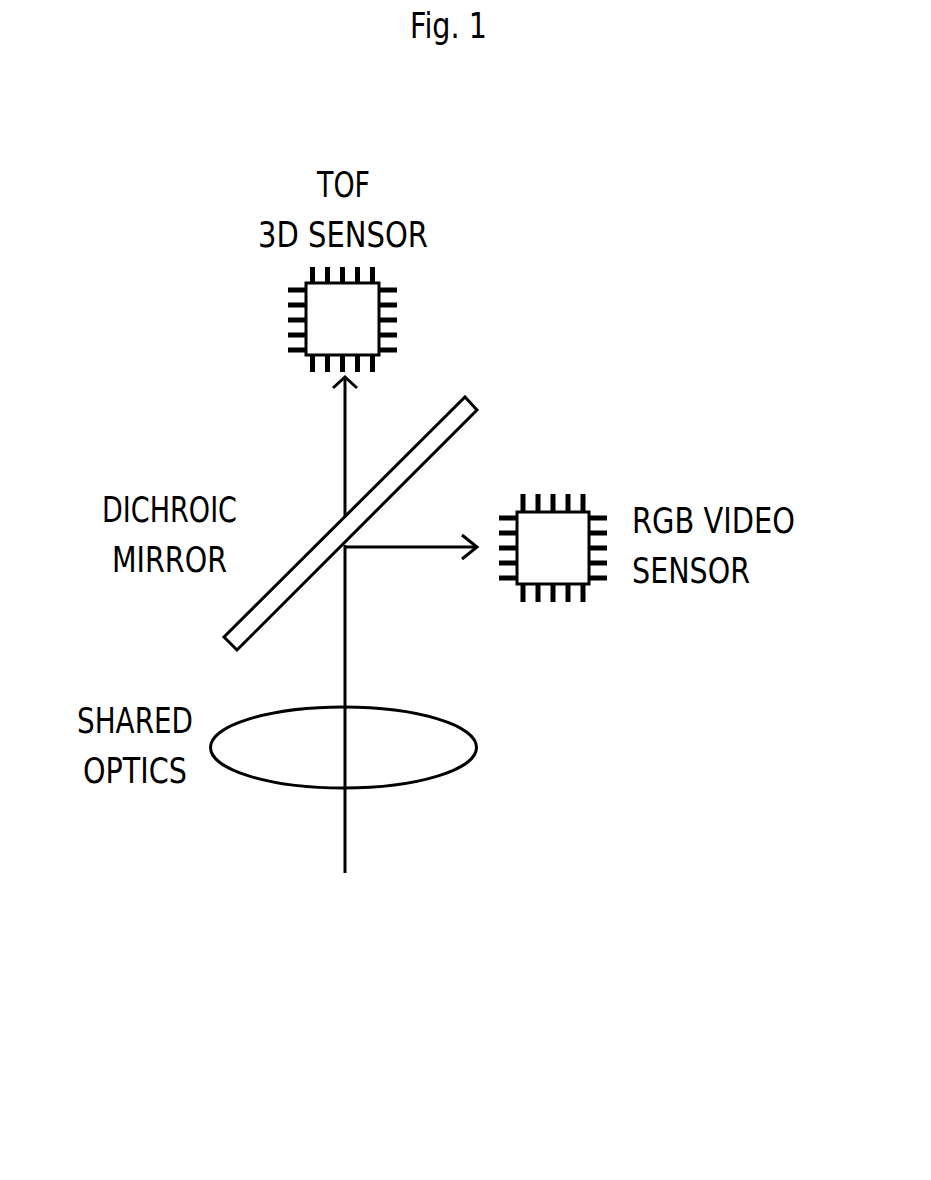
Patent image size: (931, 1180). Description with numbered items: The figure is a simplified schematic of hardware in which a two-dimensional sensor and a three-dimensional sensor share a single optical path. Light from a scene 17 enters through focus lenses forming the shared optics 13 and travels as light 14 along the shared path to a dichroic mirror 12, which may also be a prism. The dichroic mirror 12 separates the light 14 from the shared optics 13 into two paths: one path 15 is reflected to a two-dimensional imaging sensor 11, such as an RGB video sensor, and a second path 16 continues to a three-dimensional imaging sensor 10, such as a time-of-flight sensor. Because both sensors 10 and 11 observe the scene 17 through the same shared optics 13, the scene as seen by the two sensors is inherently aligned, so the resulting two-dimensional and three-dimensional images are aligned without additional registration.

The 3D imaging sensor 10 is at (325, 330).
The 2D imaging sensor 11 is at (543, 542).
The dichroic mirror 12 is at (422, 450).
The shared optics 13 is at (445, 742).
The light 14 is at (348, 610).
The first path 15 is at (405, 548).
The second path 16 is at (346, 477).
The scene 17 is at (372, 1012).